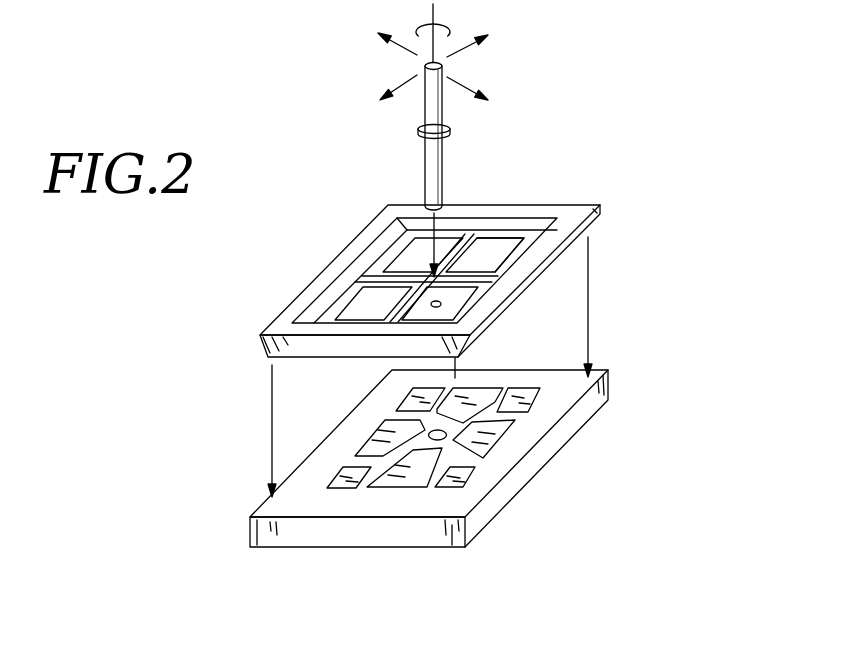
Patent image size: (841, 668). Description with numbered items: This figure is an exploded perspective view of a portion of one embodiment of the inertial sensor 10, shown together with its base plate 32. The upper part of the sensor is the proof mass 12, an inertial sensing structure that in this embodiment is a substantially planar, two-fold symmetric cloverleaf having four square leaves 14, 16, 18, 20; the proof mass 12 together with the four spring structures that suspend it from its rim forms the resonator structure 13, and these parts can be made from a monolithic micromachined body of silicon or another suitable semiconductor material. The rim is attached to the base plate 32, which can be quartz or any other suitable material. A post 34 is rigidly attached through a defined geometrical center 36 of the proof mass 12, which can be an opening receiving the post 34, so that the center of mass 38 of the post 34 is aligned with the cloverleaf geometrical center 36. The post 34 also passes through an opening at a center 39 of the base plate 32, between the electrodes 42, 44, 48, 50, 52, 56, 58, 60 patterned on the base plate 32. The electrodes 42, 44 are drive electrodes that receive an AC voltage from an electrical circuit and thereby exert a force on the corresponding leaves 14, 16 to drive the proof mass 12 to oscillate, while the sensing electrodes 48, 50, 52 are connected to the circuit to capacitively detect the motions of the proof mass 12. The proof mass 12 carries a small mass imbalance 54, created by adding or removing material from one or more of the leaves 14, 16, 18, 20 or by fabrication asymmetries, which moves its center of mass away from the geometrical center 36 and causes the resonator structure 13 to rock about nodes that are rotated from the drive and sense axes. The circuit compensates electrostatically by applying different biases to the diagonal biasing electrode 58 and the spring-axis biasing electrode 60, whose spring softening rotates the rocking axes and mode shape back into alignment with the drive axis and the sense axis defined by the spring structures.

The inertial sensor 10 is at (632, 158).
The proof mass 12 is at (490, 232).
The resonator structure 13 is at (343, 198).
The leaf 14 is at (507, 250).
The leaf 16 is at (460, 292).
The leaf 18 is at (360, 303).
The leaf 20 is at (407, 260).
The base plate 32 is at (612, 373).
The post 34 is at (426, 147).
The geometrical center 36 is at (420, 277).
The center of mass 38 is at (420, 128).
The center 39 is at (448, 436).
The drive electrode 42 is at (523, 403).
The drive electrode 44 is at (466, 470).
The sensing electrode 48 is at (489, 390).
The sensing electrode 50 is at (398, 484).
The sensing electrode 52 is at (372, 447).
The mass imbalance 54 is at (443, 303).
The electrode 56 is at (344, 486).
The diagonal biasing electrode 58 is at (407, 398).
The spring-axis biasing electrode 60 is at (497, 432).